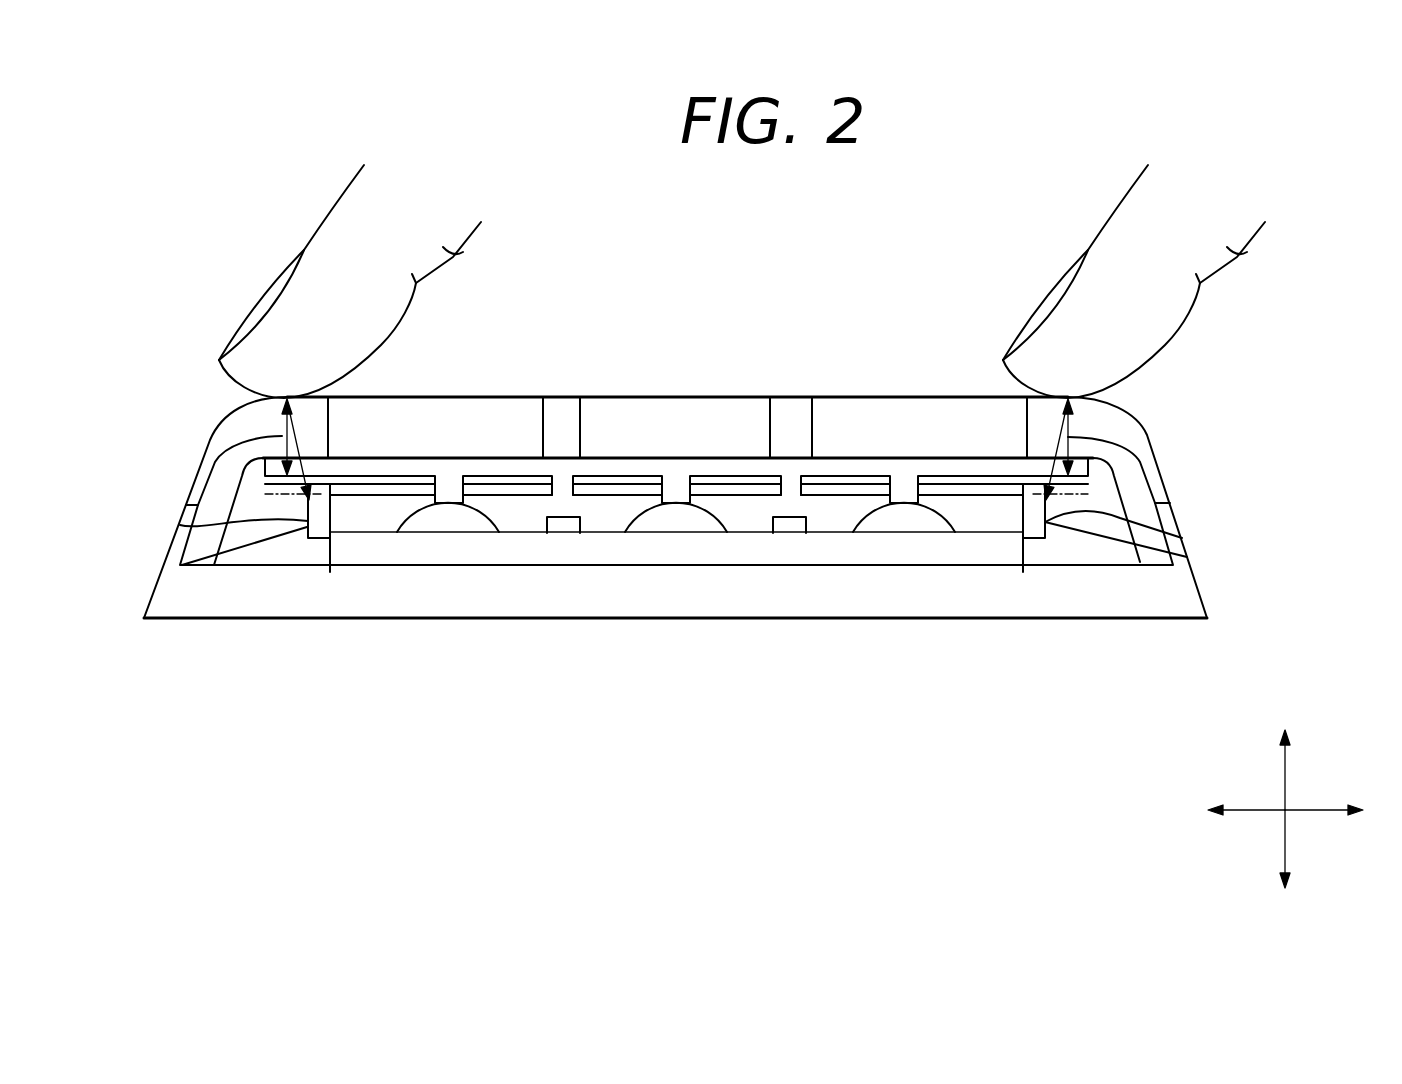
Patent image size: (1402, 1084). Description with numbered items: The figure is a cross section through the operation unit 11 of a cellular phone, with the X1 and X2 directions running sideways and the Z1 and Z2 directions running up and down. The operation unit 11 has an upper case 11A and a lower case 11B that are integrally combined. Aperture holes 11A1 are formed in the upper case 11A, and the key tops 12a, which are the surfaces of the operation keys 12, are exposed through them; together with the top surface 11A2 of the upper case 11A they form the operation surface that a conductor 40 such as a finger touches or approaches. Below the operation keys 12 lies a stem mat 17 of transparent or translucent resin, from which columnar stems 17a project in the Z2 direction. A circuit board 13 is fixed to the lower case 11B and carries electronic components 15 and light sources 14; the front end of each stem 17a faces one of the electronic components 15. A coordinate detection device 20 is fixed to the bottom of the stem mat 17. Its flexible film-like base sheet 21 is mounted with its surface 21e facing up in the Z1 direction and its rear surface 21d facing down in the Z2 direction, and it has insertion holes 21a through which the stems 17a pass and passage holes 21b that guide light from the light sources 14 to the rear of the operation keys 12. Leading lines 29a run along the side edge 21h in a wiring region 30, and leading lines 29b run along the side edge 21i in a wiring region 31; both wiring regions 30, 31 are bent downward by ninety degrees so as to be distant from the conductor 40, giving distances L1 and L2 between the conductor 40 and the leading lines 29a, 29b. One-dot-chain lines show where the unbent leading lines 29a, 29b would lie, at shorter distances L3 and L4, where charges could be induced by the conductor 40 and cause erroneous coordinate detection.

The operation unit 11 is at (222, 425).
The upper case 11A is at (1160, 470).
The aperture holes 11A1 is at (332, 428).
The top surface 11A2 is at (1062, 396).
The lower case 11B is at (1200, 595).
The operation keys 12 is at (487, 413).
The key tops 12a is at (528, 400).
The circuit board 13 is at (1000, 548).
The light sources 14 is at (560, 528).
The electronic components 15 is at (473, 523).
The stem mat 17 is at (855, 463).
The stems 17a is at (450, 495).
The coordinate detection device 20 is at (1052, 536).
The base sheet 21 is at (676, 480).
The insertion holes 21a is at (510, 513).
The passage holes 21b is at (563, 495).
The rear surface 21d is at (330, 572).
The surface 21e is at (365, 497).
The side edge 21h is at (318, 538).
The side edge 21i is at (1040, 540).
The leading lines 29a is at (182, 564).
The leading lines 29b is at (1187, 557).
The wiring region 30 is at (180, 525).
The wiring region 31 is at (1182, 538).
The conductor 40 is at (1248, 257).
The distance L1 is at (297, 445).
The distance L2 is at (1057, 445).
The distance L3 is at (212, 465).
The distance L4 is at (1142, 442).
The X1 direction X1 is at (1225, 810).
The X2 direction X2 is at (1343, 810).
The Z1 direction Z1 is at (1289, 752).
The Z2 direction Z2 is at (1289, 868).